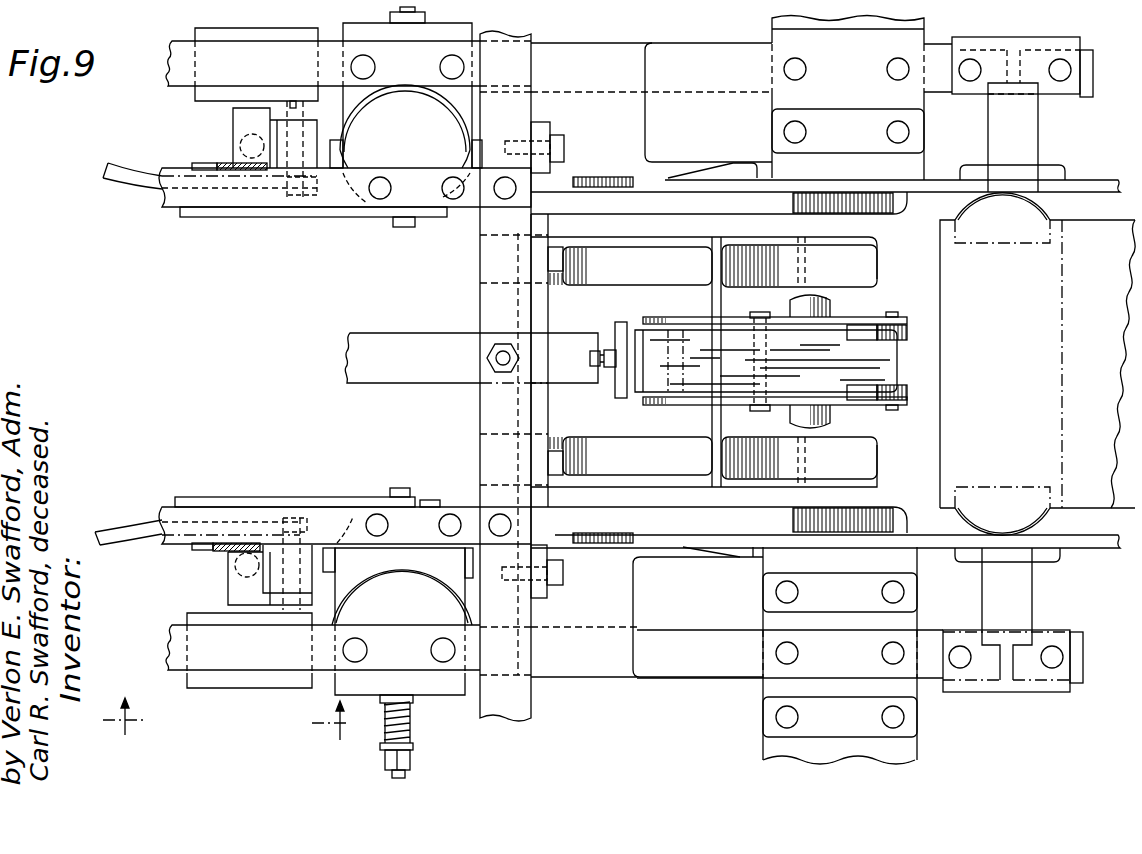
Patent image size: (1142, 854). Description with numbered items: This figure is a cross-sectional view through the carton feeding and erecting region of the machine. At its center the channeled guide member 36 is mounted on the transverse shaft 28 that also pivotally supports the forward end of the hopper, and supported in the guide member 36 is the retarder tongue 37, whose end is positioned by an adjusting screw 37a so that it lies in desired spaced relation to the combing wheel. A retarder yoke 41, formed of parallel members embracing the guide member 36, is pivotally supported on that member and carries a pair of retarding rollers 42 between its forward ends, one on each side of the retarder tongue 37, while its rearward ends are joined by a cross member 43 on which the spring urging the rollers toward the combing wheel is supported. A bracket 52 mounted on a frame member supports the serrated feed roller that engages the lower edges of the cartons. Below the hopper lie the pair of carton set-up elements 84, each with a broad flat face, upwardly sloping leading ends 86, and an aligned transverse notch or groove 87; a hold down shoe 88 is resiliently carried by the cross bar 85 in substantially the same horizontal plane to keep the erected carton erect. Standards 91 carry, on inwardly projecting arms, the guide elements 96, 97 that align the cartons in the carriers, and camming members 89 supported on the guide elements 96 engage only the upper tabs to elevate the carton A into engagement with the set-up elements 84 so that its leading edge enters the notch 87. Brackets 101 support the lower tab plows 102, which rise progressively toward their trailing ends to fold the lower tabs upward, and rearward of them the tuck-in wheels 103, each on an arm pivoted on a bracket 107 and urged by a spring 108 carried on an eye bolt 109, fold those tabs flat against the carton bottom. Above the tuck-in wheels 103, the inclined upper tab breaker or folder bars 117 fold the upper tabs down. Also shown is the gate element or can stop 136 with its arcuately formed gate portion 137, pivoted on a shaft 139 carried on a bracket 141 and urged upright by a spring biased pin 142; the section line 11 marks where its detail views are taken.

The section line 11 is at (223, 728).
The transverse shaft 28 is at (788, 303).
The channeled guide member 36 is at (834, 330).
The retarder tongue 37 is at (894, 366).
The adjusting screw 37a is at (614, 350).
The retarder yoke 41 is at (871, 406).
The retarding rollers 42 is at (898, 330).
The cross member 43 is at (645, 388).
The bracket 52 is at (214, 163).
The carton set-up elements 84 is at (637, 236).
The cross bar 85 is at (488, 417).
The leading ends 86 is at (866, 267).
The notch or groove 87 is at (800, 258).
The hold down shoe 88 is at (413, 336).
The camming members 89 is at (895, 204).
The standards 91 is at (1030, 145).
The guide element 96 is at (946, 550).
The guide element 97 is at (1088, 193).
The brackets 101 is at (648, 124).
The lower tab plows 102 is at (736, 167).
The tuck-in wheels 103 is at (422, 134).
The bracket 107 is at (460, 28).
The spring 108 is at (412, 734).
The eye bolt 109 is at (408, 768).
The upper tab breaker or folder bars 117 is at (309, 207).
The gate element or can stop 136 is at (229, 149).
The arcuately formed gate portion 137 is at (128, 185).
The shaft 139 is at (283, 205).
The bracket 141 is at (205, 27).
The spring biased pin 142 is at (233, 128).
The carton A is at (982, 362).